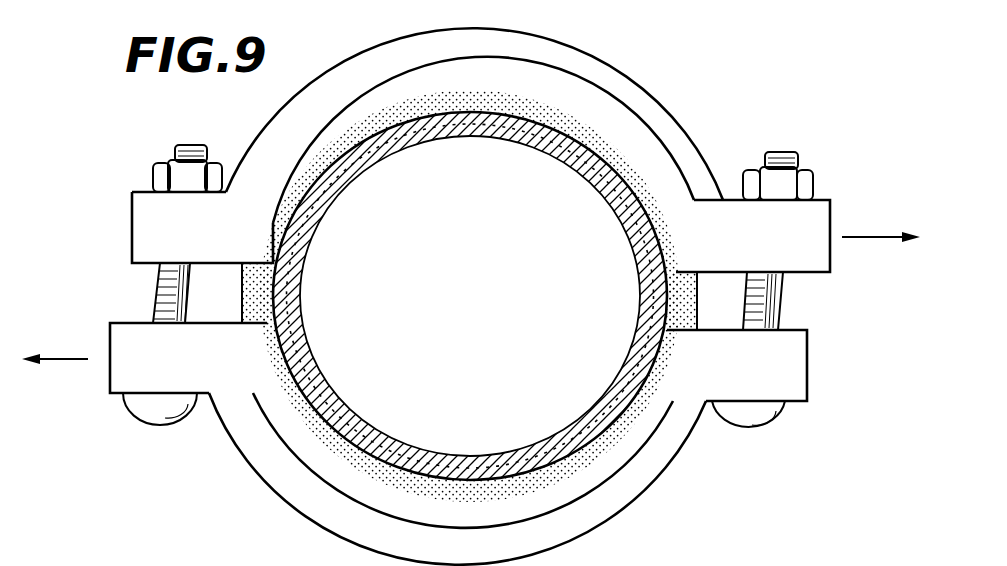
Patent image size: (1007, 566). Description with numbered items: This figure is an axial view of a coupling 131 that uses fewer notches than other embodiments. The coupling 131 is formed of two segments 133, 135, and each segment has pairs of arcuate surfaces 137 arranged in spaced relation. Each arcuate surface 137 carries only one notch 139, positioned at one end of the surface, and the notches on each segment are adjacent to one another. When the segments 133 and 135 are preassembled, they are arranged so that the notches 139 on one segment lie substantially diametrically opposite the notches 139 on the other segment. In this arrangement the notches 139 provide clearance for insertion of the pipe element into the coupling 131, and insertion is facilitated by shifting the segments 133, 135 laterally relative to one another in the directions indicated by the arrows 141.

The coupling 131 is at (470, 290).
The segment 133 is at (612, 505).
The segment 135 is at (570, 67).
The arcuate surfaces 137 is at (493, 118).
The notch 139 is at (293, 227).
The arrows 141 is at (55, 358).